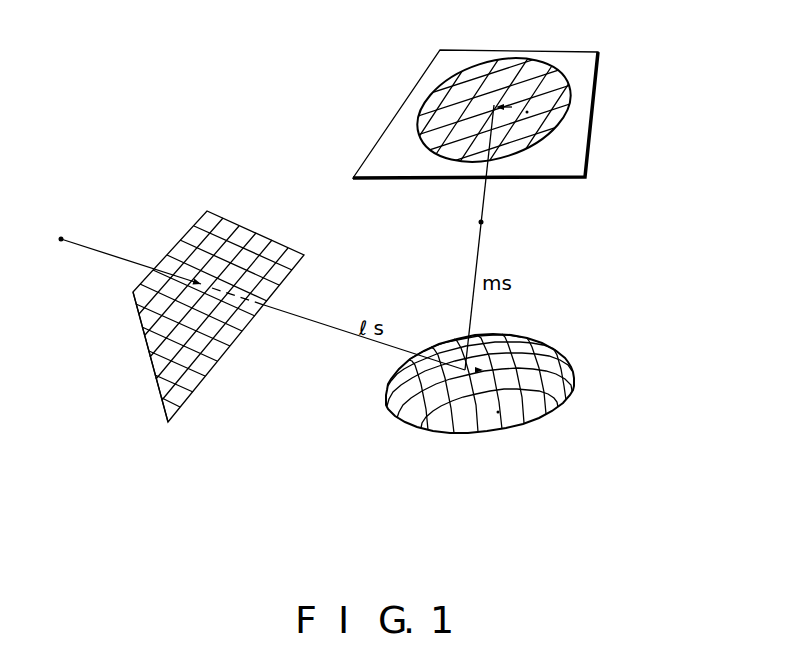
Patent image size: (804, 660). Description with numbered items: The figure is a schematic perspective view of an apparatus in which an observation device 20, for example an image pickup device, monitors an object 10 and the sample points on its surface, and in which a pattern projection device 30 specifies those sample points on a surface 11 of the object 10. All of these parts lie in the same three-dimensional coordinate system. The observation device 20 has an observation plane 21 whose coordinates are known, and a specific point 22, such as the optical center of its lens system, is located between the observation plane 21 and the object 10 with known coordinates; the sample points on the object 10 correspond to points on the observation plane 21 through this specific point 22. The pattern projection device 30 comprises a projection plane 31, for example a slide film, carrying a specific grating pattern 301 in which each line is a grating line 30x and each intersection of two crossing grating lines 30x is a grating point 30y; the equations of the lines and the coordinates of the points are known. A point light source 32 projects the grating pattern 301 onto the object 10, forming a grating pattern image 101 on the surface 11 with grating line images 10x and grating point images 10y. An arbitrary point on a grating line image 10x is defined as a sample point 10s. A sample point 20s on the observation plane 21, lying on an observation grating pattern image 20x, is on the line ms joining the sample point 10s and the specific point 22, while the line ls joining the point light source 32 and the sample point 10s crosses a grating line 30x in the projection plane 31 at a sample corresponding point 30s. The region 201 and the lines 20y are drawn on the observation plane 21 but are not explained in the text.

The object 10 is at (651, 312).
The grating pattern image 101 is at (547, 334).
The object surface 11 is at (493, 374).
The grating line image 10x is at (553, 357).
The grating point image 10y is at (420, 405).
The sample point 10s is at (498, 412).
The observation device 20 is at (652, 252).
The observation plane 21 is at (458, 57).
The image region (ellipse) 201 is at (414, 90).
The observation grating pattern image 20x is at (576, 84).
The y-direction grid lines of image 20y is at (458, 130).
The sample point on the observation plane 20s is at (527, 112).
The specific point 22 is at (482, 223).
The pattern projection device 30 is at (330, 443).
The grating pattern 301 is at (218, 210).
The projection plane 31 is at (138, 297).
The grating line 30x is at (241, 234).
The grating point 30y is at (197, 358).
The sample corresponding point 30s is at (197, 277).
The point light source 32 is at (60, 242).